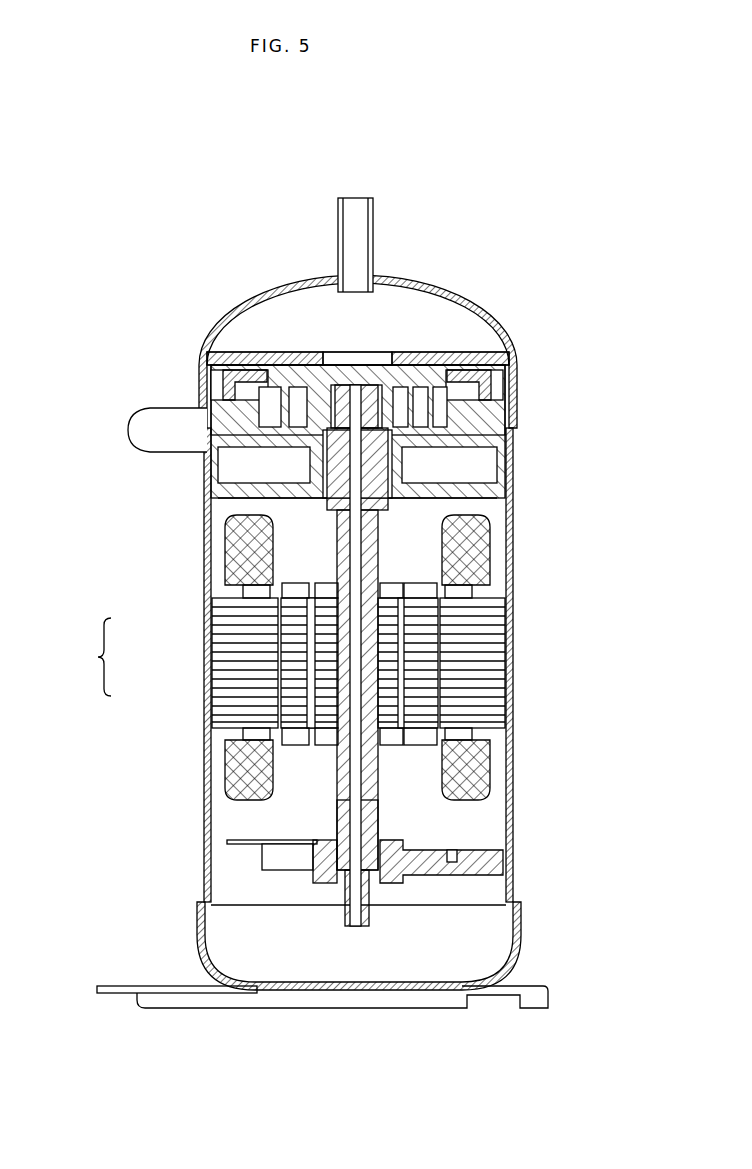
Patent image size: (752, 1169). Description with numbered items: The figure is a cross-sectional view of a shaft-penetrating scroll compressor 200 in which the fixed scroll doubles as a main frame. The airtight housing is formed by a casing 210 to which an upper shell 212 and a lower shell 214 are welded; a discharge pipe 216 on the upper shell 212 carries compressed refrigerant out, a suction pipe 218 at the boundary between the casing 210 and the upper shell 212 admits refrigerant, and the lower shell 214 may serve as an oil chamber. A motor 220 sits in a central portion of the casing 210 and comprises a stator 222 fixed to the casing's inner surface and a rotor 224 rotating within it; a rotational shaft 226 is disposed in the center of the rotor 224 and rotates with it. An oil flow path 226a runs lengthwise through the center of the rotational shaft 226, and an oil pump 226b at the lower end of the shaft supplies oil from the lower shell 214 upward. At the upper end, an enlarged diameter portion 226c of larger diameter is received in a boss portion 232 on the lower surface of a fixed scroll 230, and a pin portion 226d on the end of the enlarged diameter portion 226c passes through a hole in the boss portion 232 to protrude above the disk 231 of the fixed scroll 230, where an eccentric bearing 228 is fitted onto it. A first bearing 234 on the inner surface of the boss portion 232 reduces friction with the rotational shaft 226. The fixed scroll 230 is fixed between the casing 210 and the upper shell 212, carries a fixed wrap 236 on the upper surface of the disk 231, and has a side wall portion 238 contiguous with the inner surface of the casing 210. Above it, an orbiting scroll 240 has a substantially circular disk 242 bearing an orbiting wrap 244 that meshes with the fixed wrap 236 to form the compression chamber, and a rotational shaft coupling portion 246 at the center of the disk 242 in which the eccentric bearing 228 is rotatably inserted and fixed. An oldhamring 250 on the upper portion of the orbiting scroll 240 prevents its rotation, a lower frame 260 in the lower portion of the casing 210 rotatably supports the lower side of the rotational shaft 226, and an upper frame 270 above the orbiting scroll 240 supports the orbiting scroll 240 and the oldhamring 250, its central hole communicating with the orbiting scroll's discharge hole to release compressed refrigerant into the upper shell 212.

The scroll compressor 200 is at (364, 623).
The casing 210 is at (513, 585).
The upper shell 212 is at (480, 303).
The lower shell 214 is at (521, 930).
The discharge pipe 216 is at (374, 205).
The suction pipe 218 is at (133, 428).
The motor 220 is at (85, 657).
The stator 222 is at (230, 627).
The rotor 224 is at (288, 655).
The rotational shaft 226 is at (359, 655).
The oil flow path 226a is at (370, 822).
The oil pump 226b is at (362, 900).
The enlarged diameter portion 226c is at (377, 470).
The pin portion 226d is at (372, 408).
The eccentric bearing 228 is at (317, 462).
The fixed scroll 230 is at (255, 393).
The disk 231 is at (492, 432).
The boss portion 232 is at (312, 467).
The first bearing 234 is at (303, 493).
The fixed wrap 236 is at (343, 415).
The side wall portion 238 is at (252, 378).
The orbiting scroll 240 is at (270, 372).
The disk 242 is at (450, 352).
The orbiting wrap 244 is at (405, 403).
The rotational shaft coupling portion 246 is at (322, 403).
The oldhamring 250 is at (470, 380).
The lower frame 260 is at (327, 863).
The upper frame 270 is at (435, 352).